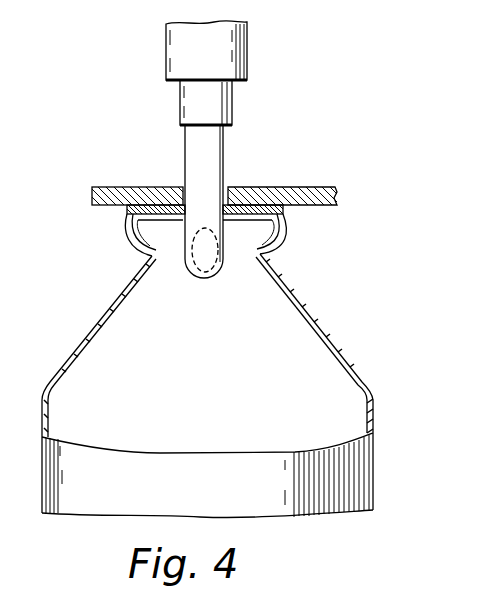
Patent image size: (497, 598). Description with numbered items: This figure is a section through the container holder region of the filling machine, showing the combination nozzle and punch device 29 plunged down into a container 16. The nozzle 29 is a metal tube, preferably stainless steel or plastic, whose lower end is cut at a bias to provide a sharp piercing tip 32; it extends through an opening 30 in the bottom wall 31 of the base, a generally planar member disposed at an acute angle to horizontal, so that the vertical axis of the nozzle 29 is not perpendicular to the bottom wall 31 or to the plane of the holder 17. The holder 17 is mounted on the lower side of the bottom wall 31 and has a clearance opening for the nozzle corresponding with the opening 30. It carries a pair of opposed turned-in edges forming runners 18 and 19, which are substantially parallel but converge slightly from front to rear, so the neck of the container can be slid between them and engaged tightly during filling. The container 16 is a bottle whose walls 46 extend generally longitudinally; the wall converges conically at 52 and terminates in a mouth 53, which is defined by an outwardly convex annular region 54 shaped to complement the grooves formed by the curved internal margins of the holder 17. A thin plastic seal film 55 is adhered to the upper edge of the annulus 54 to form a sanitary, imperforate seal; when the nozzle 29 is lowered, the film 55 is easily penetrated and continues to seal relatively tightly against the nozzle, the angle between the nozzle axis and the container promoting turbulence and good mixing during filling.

The container 16 is at (381, 457).
The holder 17 is at (292, 233).
The runner 18 is at (263, 257).
The runner 19 is at (140, 254).
The combination nozzle and punch device 29 is at (200, 134).
The opening 30 is at (228, 200).
The bottom wall 31 is at (297, 192).
The piercing tip 32 is at (203, 277).
The walls 46 is at (372, 400).
The conically converging wall portion 52 is at (347, 318).
The mouth 53 is at (172, 205).
The convex annular portion 54 is at (127, 226).
The seal film 55 is at (239, 238).